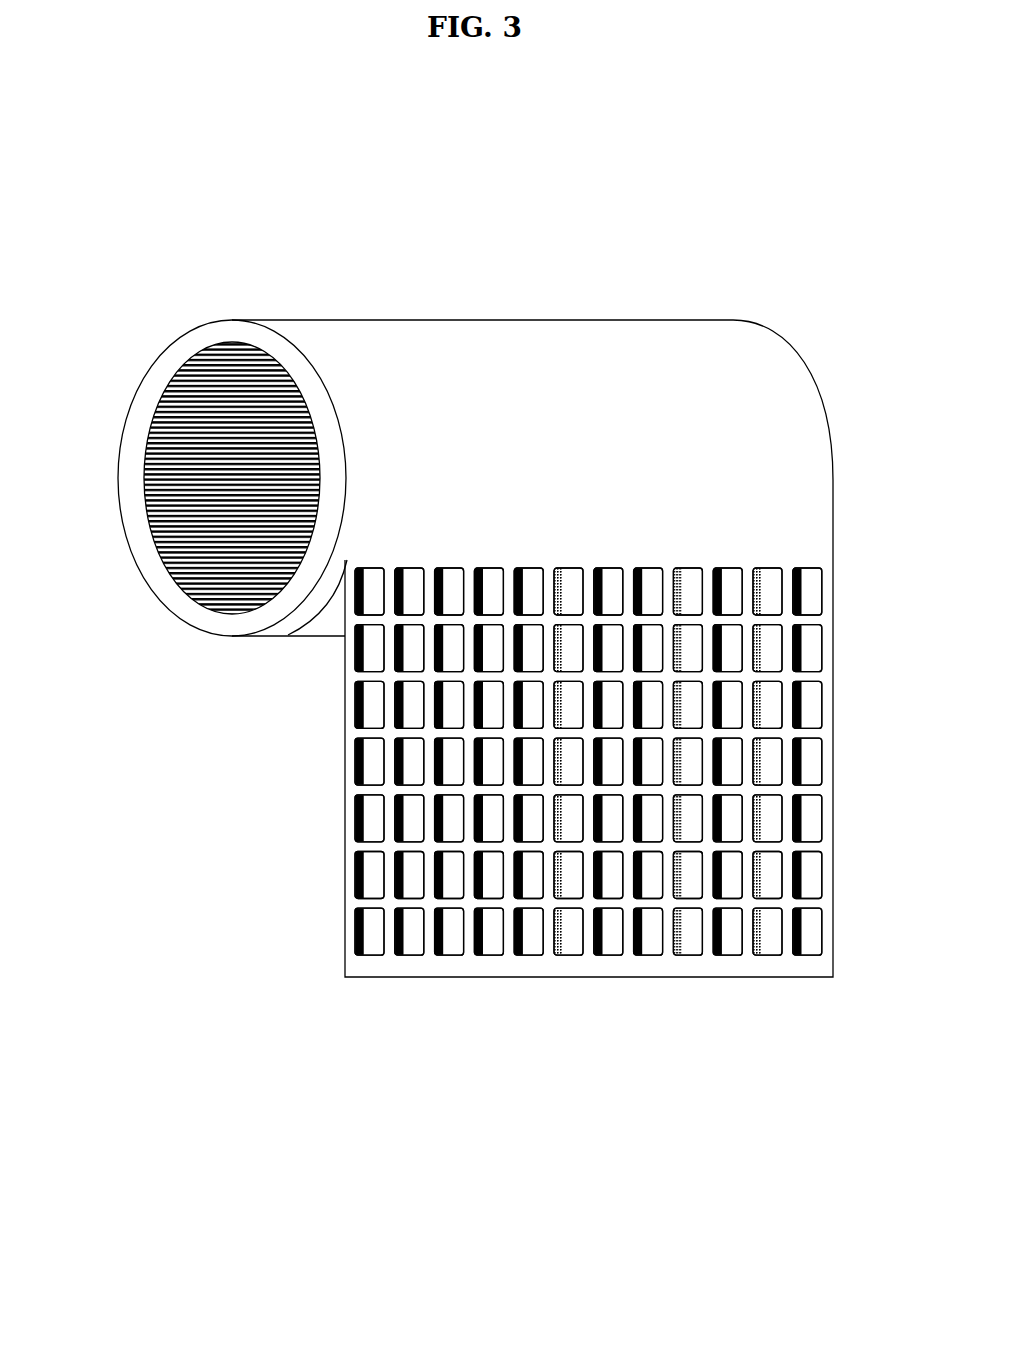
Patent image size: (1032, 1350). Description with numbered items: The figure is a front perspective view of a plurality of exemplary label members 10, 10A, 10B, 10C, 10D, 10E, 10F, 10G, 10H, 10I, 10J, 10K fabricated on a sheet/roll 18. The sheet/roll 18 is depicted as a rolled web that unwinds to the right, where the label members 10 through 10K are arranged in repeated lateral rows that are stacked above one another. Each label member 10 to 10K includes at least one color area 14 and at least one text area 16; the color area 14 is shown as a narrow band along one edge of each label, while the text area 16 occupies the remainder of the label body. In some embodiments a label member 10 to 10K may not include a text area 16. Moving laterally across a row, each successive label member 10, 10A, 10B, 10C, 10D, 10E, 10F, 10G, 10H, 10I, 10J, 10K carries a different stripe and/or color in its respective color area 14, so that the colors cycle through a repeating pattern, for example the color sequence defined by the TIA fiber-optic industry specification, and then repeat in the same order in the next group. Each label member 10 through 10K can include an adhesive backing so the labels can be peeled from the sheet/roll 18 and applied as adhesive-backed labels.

The label member 10 is at (367, 558).
The label member 10A is at (411, 558).
The label member 10B is at (450, 558).
The label member 10C is at (490, 558).
The label member 10D is at (533, 558).
The label member 10E is at (571, 558).
The label member 10F is at (608, 558).
The label member 10G is at (649, 558).
The label member 10H is at (688, 558).
The label member 10I is at (728, 558).
The label member 10J is at (770, 558).
The label member 10K is at (812, 558).
The color area 14 is at (809, 558).
The text area 16 is at (384, 574).
The sheet/roll 18 is at (155, 378).